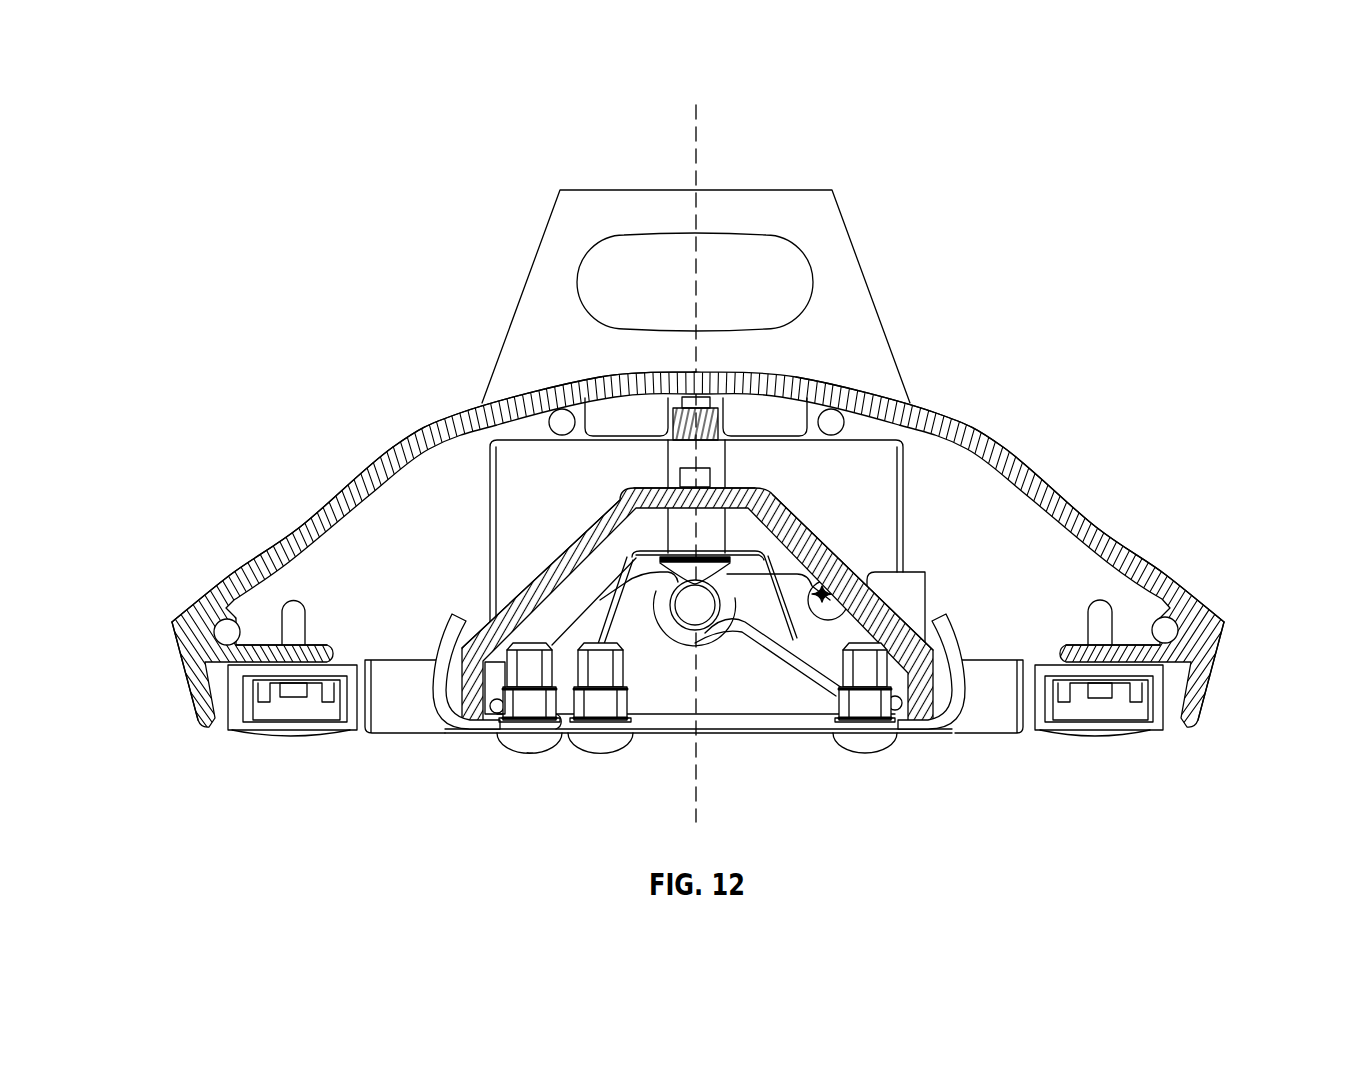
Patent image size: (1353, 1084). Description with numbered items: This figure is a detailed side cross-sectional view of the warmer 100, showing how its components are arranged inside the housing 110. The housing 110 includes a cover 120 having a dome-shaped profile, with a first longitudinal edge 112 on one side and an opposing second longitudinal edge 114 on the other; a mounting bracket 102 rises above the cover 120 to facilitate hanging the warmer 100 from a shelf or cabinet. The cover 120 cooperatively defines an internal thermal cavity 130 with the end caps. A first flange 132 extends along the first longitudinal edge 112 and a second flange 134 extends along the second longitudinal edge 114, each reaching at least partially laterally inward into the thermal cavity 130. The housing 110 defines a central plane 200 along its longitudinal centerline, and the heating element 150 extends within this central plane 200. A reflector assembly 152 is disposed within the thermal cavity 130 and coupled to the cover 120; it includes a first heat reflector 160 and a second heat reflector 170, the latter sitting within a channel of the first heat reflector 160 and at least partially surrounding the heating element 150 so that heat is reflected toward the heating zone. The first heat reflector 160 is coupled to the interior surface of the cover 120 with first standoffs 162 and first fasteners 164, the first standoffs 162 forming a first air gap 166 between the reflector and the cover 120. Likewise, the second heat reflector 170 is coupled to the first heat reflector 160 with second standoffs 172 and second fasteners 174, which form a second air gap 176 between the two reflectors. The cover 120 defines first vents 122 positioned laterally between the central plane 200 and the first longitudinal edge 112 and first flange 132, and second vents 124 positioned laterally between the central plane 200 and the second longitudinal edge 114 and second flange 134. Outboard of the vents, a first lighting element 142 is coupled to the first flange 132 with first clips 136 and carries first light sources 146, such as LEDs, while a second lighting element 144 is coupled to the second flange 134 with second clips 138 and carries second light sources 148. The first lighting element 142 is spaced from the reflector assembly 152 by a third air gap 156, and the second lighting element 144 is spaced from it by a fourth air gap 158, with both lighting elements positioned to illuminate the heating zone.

The warmer 100 is at (248, 178).
The mounting bracket 102 is at (614, 196).
The housing 110 is at (942, 397).
The first longitudinal edge 112 is at (1237, 686).
The second longitudinal edge 114 is at (162, 682).
The cover 120 is at (290, 519).
The first vents 122 is at (1000, 456).
The second vents 124 is at (394, 452).
The thermal cavity 130 is at (465, 456).
The first flange 132 is at (1082, 645).
The second flange 134 is at (307, 645).
The first clips 136 is at (1045, 662).
The second clips 138 is at (340, 660).
The first lighting element 142 is at (1090, 742).
The second lighting element 144 is at (298, 748).
The first light sources 146 is at (1100, 700).
The second light sources 148 is at (292, 698).
The heating element 150 is at (688, 630).
The reflector assembly 152 is at (856, 624).
The third air gap 156 is at (976, 724).
The fourth air gap 158 is at (396, 724).
The first heat reflector 160 is at (824, 574).
The first standoffs 162 is at (672, 482).
The first fasteners 164 is at (758, 487).
The first air gap 166 is at (652, 454).
The second heat reflector 170 is at (762, 624).
The second standoffs 172 is at (772, 497).
The second fasteners 174 is at (655, 556).
The second air gap 176 is at (645, 528).
The central plane 200 is at (698, 150).